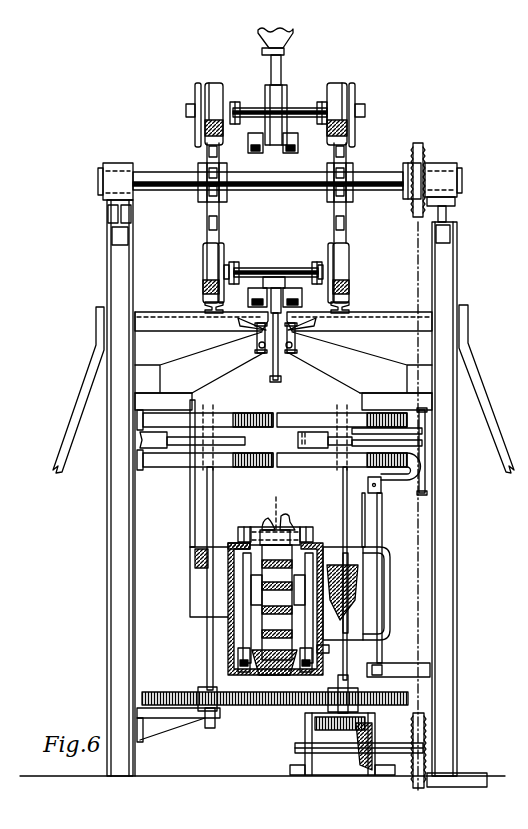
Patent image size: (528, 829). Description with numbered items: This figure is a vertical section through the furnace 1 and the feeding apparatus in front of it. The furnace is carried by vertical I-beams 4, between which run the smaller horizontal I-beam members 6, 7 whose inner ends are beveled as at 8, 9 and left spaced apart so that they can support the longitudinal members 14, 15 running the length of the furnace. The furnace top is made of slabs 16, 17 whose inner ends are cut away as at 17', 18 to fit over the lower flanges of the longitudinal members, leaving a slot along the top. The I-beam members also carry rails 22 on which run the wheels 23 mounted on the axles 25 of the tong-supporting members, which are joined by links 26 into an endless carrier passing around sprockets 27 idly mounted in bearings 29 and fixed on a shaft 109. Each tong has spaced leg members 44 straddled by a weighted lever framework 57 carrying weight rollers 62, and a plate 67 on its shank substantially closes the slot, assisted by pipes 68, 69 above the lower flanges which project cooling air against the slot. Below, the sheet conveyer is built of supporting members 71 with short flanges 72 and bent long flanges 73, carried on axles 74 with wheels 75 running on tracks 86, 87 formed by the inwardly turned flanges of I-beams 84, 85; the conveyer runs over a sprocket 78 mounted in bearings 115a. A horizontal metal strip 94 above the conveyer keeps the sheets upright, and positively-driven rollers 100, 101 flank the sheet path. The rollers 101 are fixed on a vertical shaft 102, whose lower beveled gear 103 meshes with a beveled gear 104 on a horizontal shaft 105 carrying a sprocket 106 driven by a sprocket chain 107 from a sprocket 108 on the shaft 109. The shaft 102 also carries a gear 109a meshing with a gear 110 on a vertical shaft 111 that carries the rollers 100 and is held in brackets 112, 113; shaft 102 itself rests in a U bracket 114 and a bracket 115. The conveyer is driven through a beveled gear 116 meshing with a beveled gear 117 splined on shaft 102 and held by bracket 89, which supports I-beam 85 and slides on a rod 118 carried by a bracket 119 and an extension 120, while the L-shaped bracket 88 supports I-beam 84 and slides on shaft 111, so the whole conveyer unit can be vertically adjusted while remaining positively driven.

The furnace 1 is at (148, 400).
The vertical I-beams 4 is at (120, 257).
The I-beam member 6 is at (170, 321).
The I-beam member 7 is at (388, 320).
The beveled inner end 8 is at (252, 325).
The beveled inner end 9 is at (292, 325).
The longitudinal member 14 is at (256, 336).
The longitudinal member 15 is at (297, 336).
The slab 16 is at (182, 372).
The slab 17 is at (362, 362).
The cut away portion 17' is at (228, 370).
The cut away portion 18 is at (297, 347).
The rails 22 is at (207, 303).
The wheels 23 is at (213, 102).
The axles 25 is at (251, 110).
The links 26 is at (350, 106).
The sprockets 27 is at (206, 157).
The bearings 29 is at (118, 163).
The leg members 44 is at (281, 77).
The weighted lever framework 57 is at (286, 101).
The weight rollers 62 is at (297, 142).
The plate 67 is at (286, 50).
The pipe 68 is at (262, 349).
The pipe 69 is at (289, 349).
The supporting members 71 is at (252, 528).
The short flanges 72 is at (263, 522).
The long flanges 73 is at (282, 536).
The axles 74 is at (273, 505).
The wheels 75 is at (309, 530).
The sprocket 78 is at (284, 531).
The I-beam 84 is at (230, 628).
The I-beam 85 is at (326, 656).
The tracks 86 is at (244, 673).
The tracks 87 is at (228, 545).
The bracket 88 is at (222, 578).
The bracket 89 is at (380, 633).
The horizontal metal strip 94 is at (298, 441).
The positively-driven rollers 100 is at (232, 418).
The positively-driven rollers 101 is at (326, 420).
The vertical shaft 102 is at (349, 510).
The beveled gear 103 is at (323, 728).
The beveled gear 104 is at (362, 765).
The horizontal shaft 105 is at (295, 749).
The sprocket 106 is at (415, 735).
The sprocket chain 107 is at (422, 558).
The sprocket 108 is at (420, 152).
The shaft 109 is at (370, 172).
The horizontally disposed gear 109a is at (410, 698).
The horizontally disposed gear 110 is at (172, 691).
The vertical shaft 111 is at (206, 536).
The bracket 112 is at (166, 440).
The bracket 113 is at (142, 734).
The U bracket 114 is at (315, 708).
The bracket 115 is at (398, 437).
The bearings 115a is at (248, 590).
The beveled gear 116 is at (348, 606).
The beveled gear 117 is at (363, 575).
The rod 118 is at (383, 531).
The bracket 119 is at (395, 672).
The extension 120 is at (384, 488).